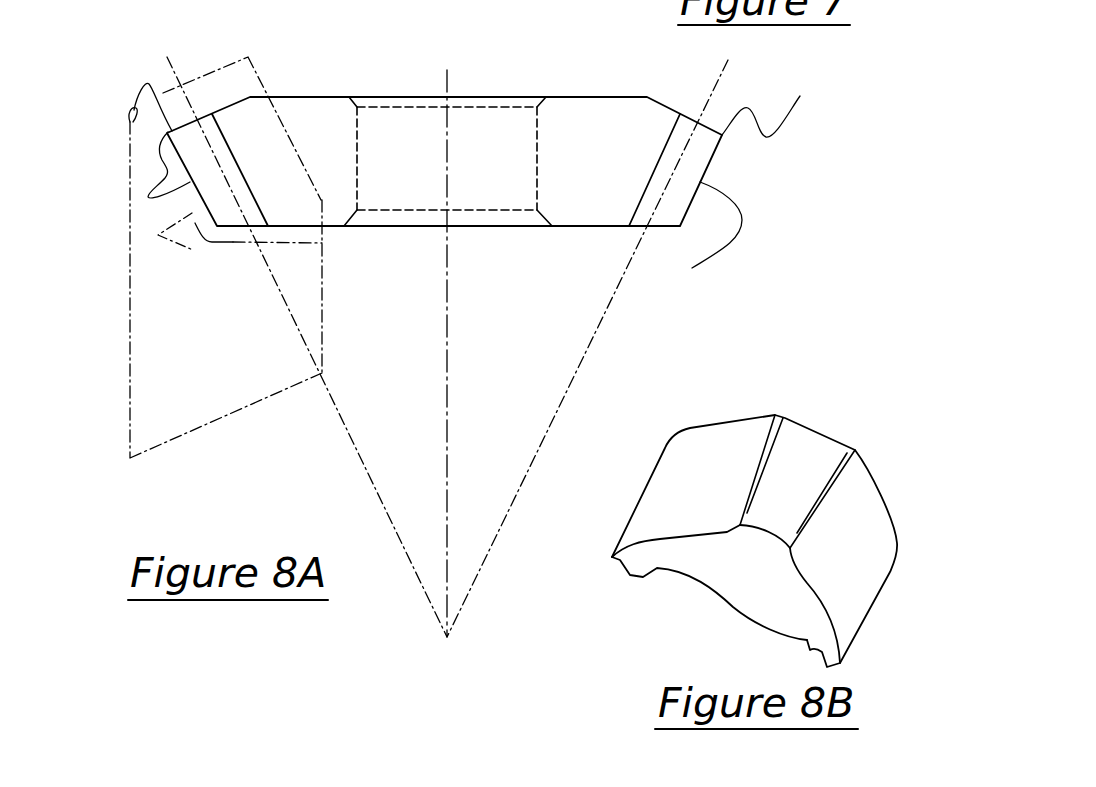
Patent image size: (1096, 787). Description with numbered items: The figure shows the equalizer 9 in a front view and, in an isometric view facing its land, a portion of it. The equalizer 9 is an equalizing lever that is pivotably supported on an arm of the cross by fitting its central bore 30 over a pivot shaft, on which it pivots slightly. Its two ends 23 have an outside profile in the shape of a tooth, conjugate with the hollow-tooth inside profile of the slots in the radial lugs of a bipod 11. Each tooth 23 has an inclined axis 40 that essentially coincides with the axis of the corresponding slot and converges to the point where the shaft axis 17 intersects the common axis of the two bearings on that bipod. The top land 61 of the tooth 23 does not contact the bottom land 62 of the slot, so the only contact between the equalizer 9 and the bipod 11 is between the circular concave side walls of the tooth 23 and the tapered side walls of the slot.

In FIG. 8A, the equalizer 9 is at (349, 78).
In FIG. 8B, the equalizer 9 is at (893, 442).
In FIG. 8A, the bipod 11 is at (130, 315).
In FIG. 8A, the axis 17 is at (448, 253).
In FIG. 8A, the end of the equalizer 23 is at (130, 122).
In FIG. 8B, the end of the equalizer 23 is at (757, 543).
In FIG. 8B, the central bore 30 is at (773, 618).
In FIG. 8A, the inclined axis 40 is at (352, 432).
In FIG. 8A, the top land 61 is at (160, 163).
In FIG. 8B, the top land 61 is at (800, 453).
In FIG. 8A, the bottom land 62 is at (188, 260).